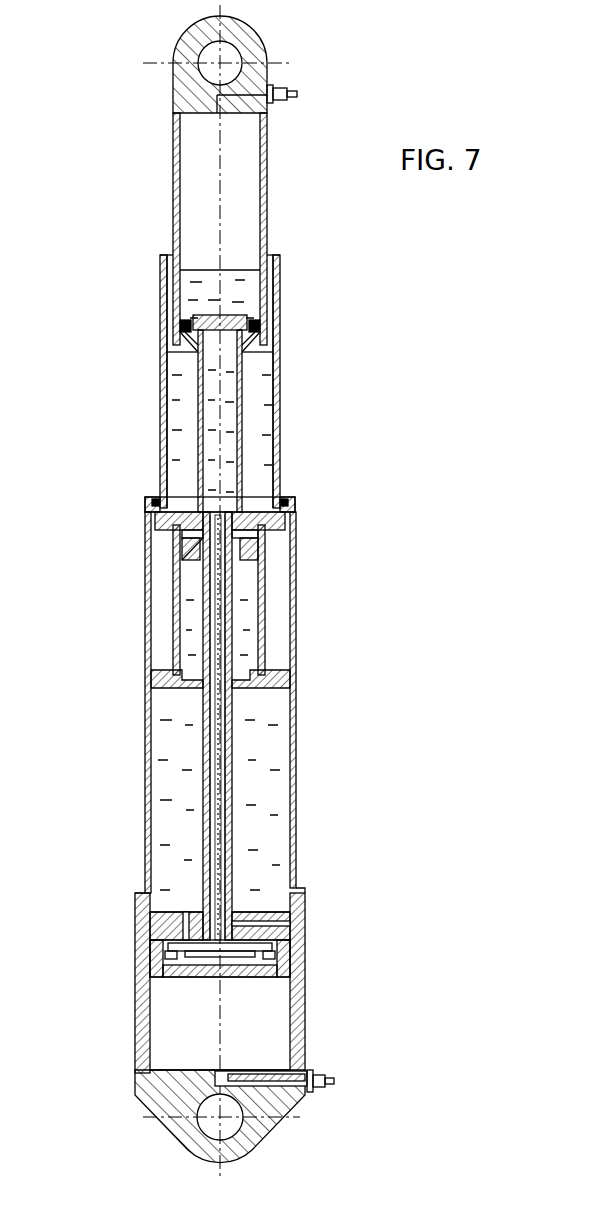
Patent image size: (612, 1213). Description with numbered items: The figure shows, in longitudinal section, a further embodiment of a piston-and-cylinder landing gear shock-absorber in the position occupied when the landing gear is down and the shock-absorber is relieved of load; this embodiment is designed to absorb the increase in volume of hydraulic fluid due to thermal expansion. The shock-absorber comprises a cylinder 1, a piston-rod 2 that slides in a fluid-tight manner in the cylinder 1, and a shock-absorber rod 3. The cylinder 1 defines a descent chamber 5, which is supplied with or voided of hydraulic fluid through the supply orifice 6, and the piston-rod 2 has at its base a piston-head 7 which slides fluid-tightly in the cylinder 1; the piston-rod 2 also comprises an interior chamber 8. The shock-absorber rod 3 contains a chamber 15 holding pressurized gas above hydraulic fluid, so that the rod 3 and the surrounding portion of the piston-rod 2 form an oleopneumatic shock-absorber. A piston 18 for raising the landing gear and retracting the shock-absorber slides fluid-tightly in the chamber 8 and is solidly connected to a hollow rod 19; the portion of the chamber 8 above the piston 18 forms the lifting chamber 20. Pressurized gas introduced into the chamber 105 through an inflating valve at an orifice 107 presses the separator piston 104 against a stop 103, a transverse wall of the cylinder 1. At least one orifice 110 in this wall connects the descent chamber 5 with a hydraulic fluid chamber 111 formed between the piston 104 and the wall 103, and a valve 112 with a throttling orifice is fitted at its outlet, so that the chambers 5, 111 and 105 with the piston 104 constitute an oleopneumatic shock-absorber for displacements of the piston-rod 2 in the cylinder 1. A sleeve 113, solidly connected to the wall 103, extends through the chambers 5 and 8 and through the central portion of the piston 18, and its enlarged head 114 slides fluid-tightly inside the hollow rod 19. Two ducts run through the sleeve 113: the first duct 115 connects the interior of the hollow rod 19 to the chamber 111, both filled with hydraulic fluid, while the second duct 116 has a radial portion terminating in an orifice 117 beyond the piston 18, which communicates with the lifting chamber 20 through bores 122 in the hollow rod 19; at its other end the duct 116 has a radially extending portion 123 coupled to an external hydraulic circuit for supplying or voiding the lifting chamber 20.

The cylinder 1 is at (296, 838).
The piston-rod 2 is at (280, 372).
The shock-absorber rod 3 is at (267, 162).
The descent chamber 5 is at (180, 778).
The supply orifice 6 is at (298, 903).
The piston-head 7 is at (288, 688).
The interior chamber 8 is at (266, 640).
The chamber 15 is at (197, 180).
The piston 18 is at (183, 578).
The rod 19 is at (196, 408).
The lifting chamber 20 is at (285, 522).
The stop 103 is at (150, 928).
The separator piston 104 is at (290, 985).
The chamber 105 is at (180, 1052).
The orifice 107 is at (300, 1087).
The orifice 110 is at (180, 905).
The hydraulic fluid chamber 111 is at (203, 957).
The valve 112 is at (148, 958).
The sleeve 113 is at (232, 776).
The enlarged head 114 is at (233, 512).
The duct 115 is at (210, 718).
The duct 116 is at (232, 738).
The orifice 117 is at (258, 556).
The bores 122 is at (178, 535).
The radially extending portion 123 is at (297, 925).